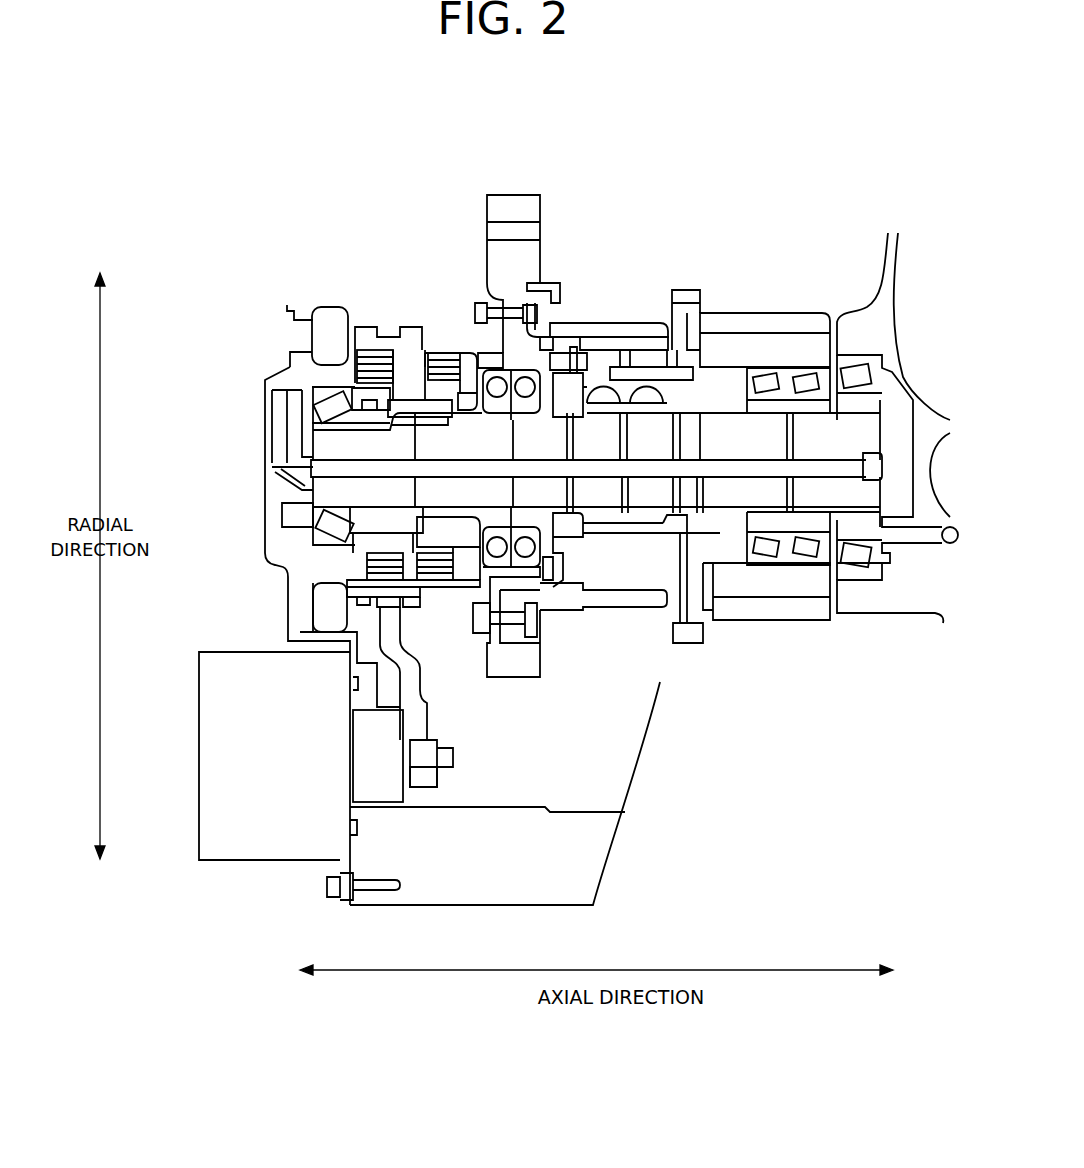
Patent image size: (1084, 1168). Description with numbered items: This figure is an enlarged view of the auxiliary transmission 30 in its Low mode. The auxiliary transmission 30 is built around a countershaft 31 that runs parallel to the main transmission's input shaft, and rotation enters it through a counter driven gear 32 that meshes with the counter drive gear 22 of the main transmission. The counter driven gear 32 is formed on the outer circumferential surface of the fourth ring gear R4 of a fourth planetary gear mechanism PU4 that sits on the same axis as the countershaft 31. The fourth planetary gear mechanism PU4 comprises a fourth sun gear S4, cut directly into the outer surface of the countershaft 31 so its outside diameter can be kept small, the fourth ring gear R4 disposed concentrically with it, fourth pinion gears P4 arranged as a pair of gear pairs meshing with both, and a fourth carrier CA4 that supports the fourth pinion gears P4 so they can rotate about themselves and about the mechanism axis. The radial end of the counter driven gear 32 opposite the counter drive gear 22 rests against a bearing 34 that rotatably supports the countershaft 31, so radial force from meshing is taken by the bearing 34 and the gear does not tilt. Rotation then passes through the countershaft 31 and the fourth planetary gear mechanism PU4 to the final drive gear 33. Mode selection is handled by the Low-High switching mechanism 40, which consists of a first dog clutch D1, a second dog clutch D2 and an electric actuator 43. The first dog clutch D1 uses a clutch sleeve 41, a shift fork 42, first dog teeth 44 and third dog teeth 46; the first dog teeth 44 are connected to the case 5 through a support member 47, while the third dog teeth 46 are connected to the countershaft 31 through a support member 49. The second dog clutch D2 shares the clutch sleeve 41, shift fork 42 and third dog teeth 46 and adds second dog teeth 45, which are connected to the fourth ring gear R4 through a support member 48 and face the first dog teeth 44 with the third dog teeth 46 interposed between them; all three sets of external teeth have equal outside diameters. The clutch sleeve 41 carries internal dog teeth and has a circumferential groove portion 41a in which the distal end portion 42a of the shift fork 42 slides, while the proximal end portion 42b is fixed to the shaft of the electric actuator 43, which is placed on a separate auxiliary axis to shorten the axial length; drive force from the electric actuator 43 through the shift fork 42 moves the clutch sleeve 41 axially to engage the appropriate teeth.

The auxiliary transmission 30 is at (781, 142).
The counter drive gear 22 is at (546, 230).
The counter driven gear 32 is at (546, 260).
The bearing 34 is at (522, 368).
The fourth pinion gears P4 is at (650, 348).
The fourth ring gear R4 is at (636, 340).
The fourth carrier CA4 is at (694, 352).
The fourth sun gear S4 is at (640, 527).
The fourth planetary gear mechanism PU4 is at (590, 615).
The first dog clutch D1 is at (359, 325).
The second dog clutch D2 is at (439, 325).
The Low-High switching mechanism 40 is at (265, 352).
The case 5 is at (262, 522).
The support member 49 is at (407, 537).
The support member 47 is at (330, 578).
The first dog teeth 44 is at (350, 599).
The groove portion 41a is at (365, 604).
The clutch sleeve 41 is at (410, 602).
The third dog teeth 46 is at (418, 601).
The second dog teeth 45 is at (465, 600).
The support member 48 is at (497, 598).
The shift fork 42 is at (447, 735).
The distal end portion 42a is at (390, 612).
The proximal end portion 42b is at (437, 778).
The electric actuator 43 is at (199, 752).
The countershaft 31 is at (722, 500).
The final drive gear 33 is at (792, 622).